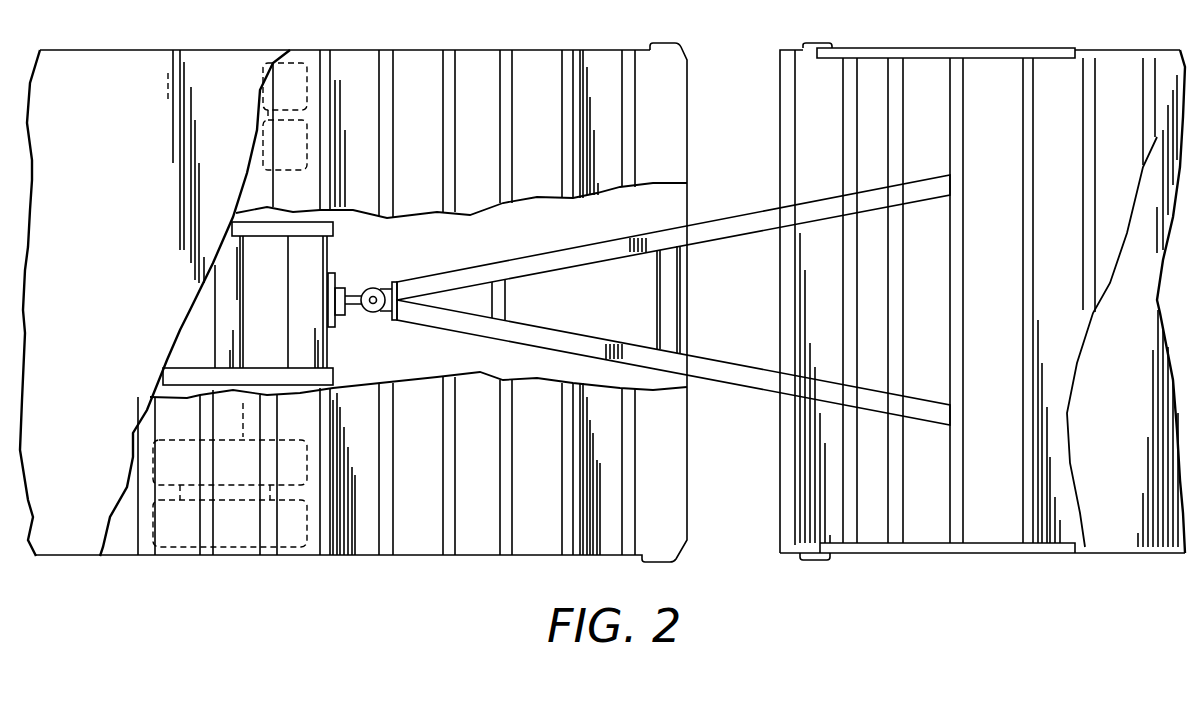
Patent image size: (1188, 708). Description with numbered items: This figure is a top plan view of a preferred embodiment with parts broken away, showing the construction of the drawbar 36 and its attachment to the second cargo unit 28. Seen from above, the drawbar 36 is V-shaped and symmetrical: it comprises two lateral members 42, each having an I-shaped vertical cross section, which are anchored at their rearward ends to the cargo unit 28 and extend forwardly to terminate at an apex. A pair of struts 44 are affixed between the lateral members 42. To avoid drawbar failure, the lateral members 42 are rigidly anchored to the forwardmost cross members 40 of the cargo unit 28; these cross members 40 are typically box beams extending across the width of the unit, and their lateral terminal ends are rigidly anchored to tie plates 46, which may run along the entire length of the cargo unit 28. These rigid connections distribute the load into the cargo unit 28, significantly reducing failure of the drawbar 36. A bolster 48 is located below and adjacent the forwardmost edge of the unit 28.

The cargo unit 28 is at (955, 303).
The drawbar 36 is at (671, 308).
The cross members 40 is at (852, 537).
The lateral members 42 is at (737, 222).
The struts 44 is at (500, 302).
The tie plates 46 is at (998, 50).
The bolster 48 is at (785, 510).